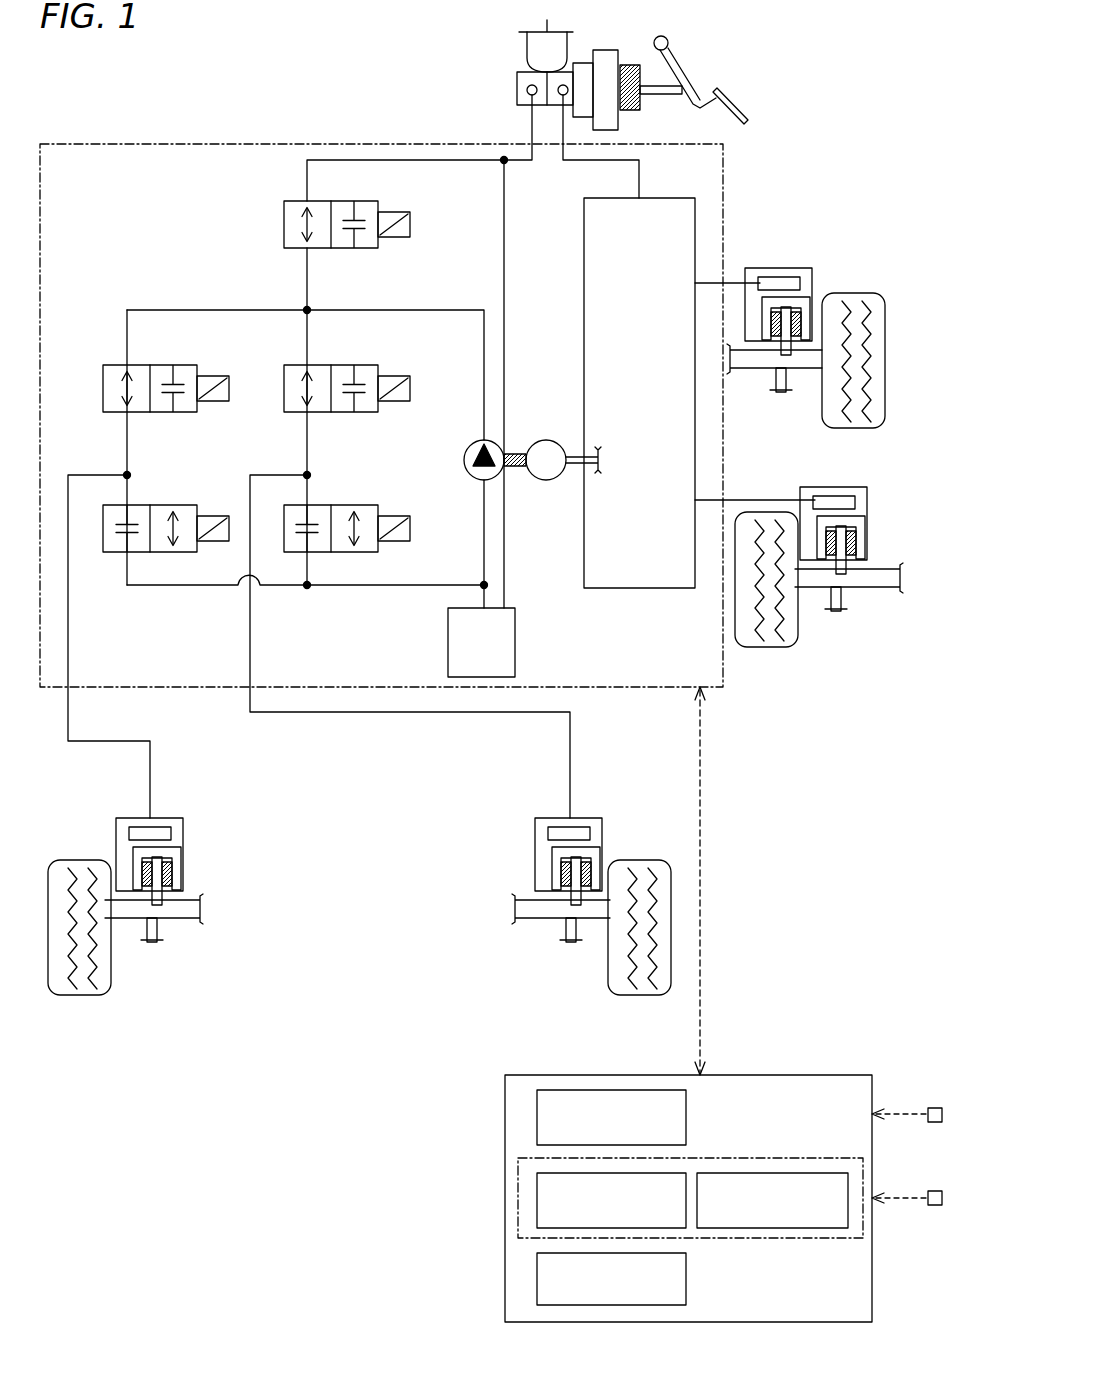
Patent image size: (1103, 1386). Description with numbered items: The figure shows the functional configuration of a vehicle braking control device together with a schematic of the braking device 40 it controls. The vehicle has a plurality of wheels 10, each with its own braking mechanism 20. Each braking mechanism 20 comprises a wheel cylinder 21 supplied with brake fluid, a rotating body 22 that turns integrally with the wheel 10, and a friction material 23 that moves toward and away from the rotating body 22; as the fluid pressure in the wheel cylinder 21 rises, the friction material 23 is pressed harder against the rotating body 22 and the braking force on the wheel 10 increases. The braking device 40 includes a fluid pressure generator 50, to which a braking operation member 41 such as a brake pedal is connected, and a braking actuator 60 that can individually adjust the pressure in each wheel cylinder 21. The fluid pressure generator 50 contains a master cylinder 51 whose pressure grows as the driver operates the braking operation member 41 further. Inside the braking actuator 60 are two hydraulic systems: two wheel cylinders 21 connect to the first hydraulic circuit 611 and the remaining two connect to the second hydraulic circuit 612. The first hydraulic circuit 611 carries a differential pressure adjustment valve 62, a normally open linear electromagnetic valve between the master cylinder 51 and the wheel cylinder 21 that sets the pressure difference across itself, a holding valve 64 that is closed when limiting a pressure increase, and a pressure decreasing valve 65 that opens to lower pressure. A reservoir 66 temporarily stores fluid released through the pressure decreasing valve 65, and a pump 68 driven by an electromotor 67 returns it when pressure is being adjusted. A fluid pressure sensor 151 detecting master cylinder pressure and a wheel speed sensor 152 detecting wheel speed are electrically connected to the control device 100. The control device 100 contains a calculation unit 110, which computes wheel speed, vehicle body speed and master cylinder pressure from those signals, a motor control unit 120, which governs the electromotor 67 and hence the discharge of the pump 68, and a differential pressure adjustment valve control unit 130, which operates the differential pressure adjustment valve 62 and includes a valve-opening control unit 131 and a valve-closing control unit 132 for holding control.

The wheel 10 is at (886, 352).
The braking mechanism 20 is at (493, 602).
The wheel cylinder 21 is at (781, 268).
The rotating body 22 is at (781, 388).
The friction material 23 is at (787, 324).
The braking device 40 is at (735, 730).
The braking operation member 41 is at (742, 106).
The fluid pressure generator 50 is at (628, 65).
The master cylinder 51 is at (517, 86).
The braking actuator 60 is at (80, 144).
The first hydraulic circuit 611 is at (352, 160).
The second hydraulic circuit 612 is at (683, 198).
The differential pressure adjustment valve 62 is at (378, 203).
The holding valve 64 is at (186, 365).
The pressure decreasing valve 65 is at (186, 505).
The reservoir 66 is at (448, 640).
The electromotor 67 is at (546, 440).
The pump 68 is at (466, 452).
The control device 100 is at (817, 1075).
The calculation unit 110 is at (537, 1278).
The motor control unit 120 is at (537, 1112).
The differential pressure adjustment valve control unit 130 is at (702, 1156).
The valve-opening control unit 131 is at (537, 1196).
The valve-closing control unit 132 is at (805, 1173).
The fluid pressure sensor 151 is at (935, 1108).
The wheel speed sensor 152 is at (935, 1205).